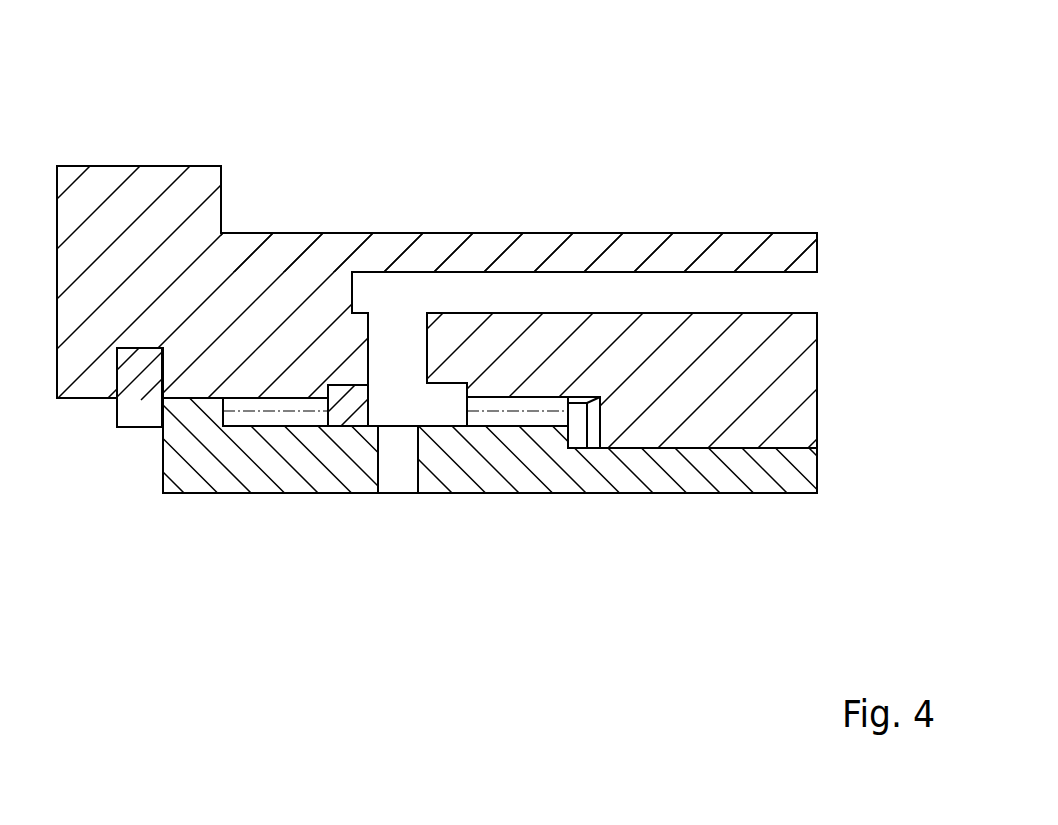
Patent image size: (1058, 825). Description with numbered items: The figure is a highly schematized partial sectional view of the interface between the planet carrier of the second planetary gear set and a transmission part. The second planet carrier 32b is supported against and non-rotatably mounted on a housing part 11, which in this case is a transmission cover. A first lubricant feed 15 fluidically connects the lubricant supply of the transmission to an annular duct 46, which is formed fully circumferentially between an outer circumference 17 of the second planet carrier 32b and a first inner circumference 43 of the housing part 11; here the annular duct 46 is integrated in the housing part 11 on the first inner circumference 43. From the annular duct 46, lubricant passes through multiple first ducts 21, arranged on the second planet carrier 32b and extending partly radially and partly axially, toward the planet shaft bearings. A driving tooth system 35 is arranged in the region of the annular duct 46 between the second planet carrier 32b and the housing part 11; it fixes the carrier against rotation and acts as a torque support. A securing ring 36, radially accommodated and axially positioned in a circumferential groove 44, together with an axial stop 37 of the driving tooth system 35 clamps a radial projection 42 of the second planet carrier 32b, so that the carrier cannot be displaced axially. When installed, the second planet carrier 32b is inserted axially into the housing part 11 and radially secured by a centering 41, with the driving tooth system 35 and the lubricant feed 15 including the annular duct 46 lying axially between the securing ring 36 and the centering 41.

The housing part 11 is at (730, 253).
The first lubricant feed 15 is at (425, 352).
The outer circumference 17 is at (213, 398).
The first ducts 21 is at (398, 458).
The second planet carrier 32b is at (292, 453).
The driving tooth system 35 is at (587, 417).
The securing ring 36 is at (143, 407).
The axial stop 37 is at (221, 410).
The centering 41 is at (818, 447).
The radial projection 42 is at (183, 410).
The first inner circumference 43 is at (603, 408).
The circumferential groove 44 is at (134, 353).
The annular duct 46 is at (350, 408).